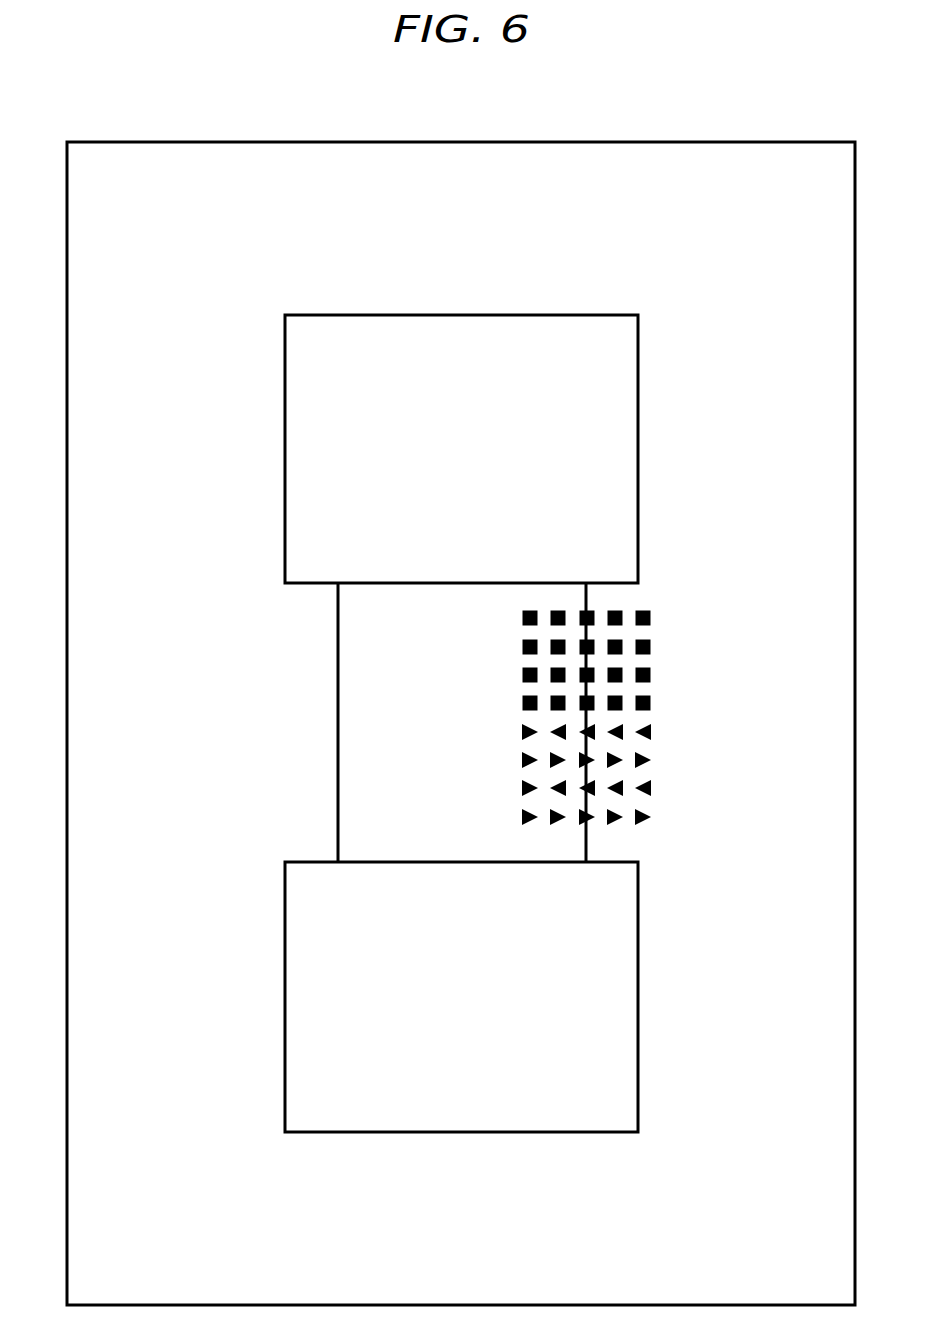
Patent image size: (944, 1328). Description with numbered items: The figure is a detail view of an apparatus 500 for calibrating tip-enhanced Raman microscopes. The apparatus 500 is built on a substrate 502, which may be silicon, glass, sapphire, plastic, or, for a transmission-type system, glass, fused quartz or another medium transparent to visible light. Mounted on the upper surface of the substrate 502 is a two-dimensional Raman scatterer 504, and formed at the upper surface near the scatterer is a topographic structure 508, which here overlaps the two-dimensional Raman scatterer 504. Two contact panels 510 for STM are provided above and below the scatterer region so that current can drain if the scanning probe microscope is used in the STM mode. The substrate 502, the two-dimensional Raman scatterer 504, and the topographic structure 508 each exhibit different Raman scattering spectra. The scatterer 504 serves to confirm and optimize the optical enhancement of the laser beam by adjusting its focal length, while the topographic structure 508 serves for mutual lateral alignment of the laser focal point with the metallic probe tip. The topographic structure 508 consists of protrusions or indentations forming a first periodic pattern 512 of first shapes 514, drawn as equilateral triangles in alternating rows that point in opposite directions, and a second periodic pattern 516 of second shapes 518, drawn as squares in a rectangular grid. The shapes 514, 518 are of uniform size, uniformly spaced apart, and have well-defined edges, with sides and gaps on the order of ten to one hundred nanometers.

The apparatus 500 is at (461, 680).
The substrate 502 is at (194, 237).
The two-dimensional Raman scatterer 504 is at (419, 736).
The topographic structure 508 is at (588, 689).
The contact panels 510 is at (479, 462).
The first periodic pattern 512 is at (587, 778).
The first shapes 514 is at (521, 816).
The second periodic pattern 516 is at (587, 661).
The second shapes 518 is at (521, 647).